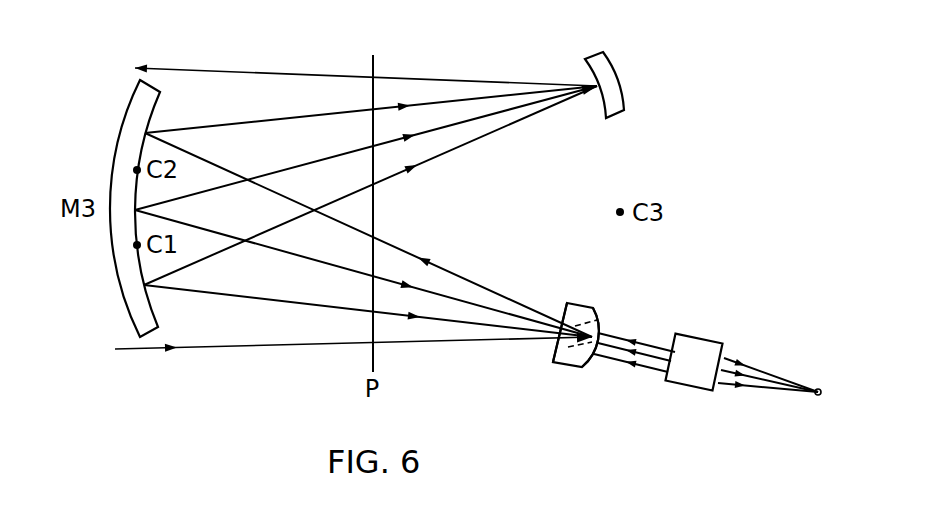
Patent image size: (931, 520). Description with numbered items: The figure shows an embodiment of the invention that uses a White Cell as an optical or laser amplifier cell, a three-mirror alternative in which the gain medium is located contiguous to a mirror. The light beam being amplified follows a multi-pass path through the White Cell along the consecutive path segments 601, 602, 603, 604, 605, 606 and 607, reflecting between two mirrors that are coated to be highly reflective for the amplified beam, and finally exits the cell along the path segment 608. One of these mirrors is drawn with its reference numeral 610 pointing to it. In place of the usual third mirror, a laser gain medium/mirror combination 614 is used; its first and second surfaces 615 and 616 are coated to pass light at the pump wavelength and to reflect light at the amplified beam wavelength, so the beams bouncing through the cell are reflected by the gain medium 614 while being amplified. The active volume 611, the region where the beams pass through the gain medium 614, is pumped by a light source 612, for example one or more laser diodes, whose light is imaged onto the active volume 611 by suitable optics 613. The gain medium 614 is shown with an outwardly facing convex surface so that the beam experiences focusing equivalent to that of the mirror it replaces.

The path segment 601 is at (353, 356).
The path segment 602 is at (368, 235).
The path segment 603 is at (371, 109).
The path segment 604 is at (370, 185).
The path segment 605 is at (368, 311).
The path segment 606 is at (363, 273).
The path segment 607 is at (366, 148).
The exit path segment 608 is at (366, 64).
The mirror M2 610 is at (586, 86).
The active volume 611 is at (607, 320).
The pump light source 612 is at (815, 389).
The optics 613 is at (703, 345).
The gain medium 614 is at (583, 313).
The first surface 615 is at (553, 355).
The second surface 616 is at (592, 363).